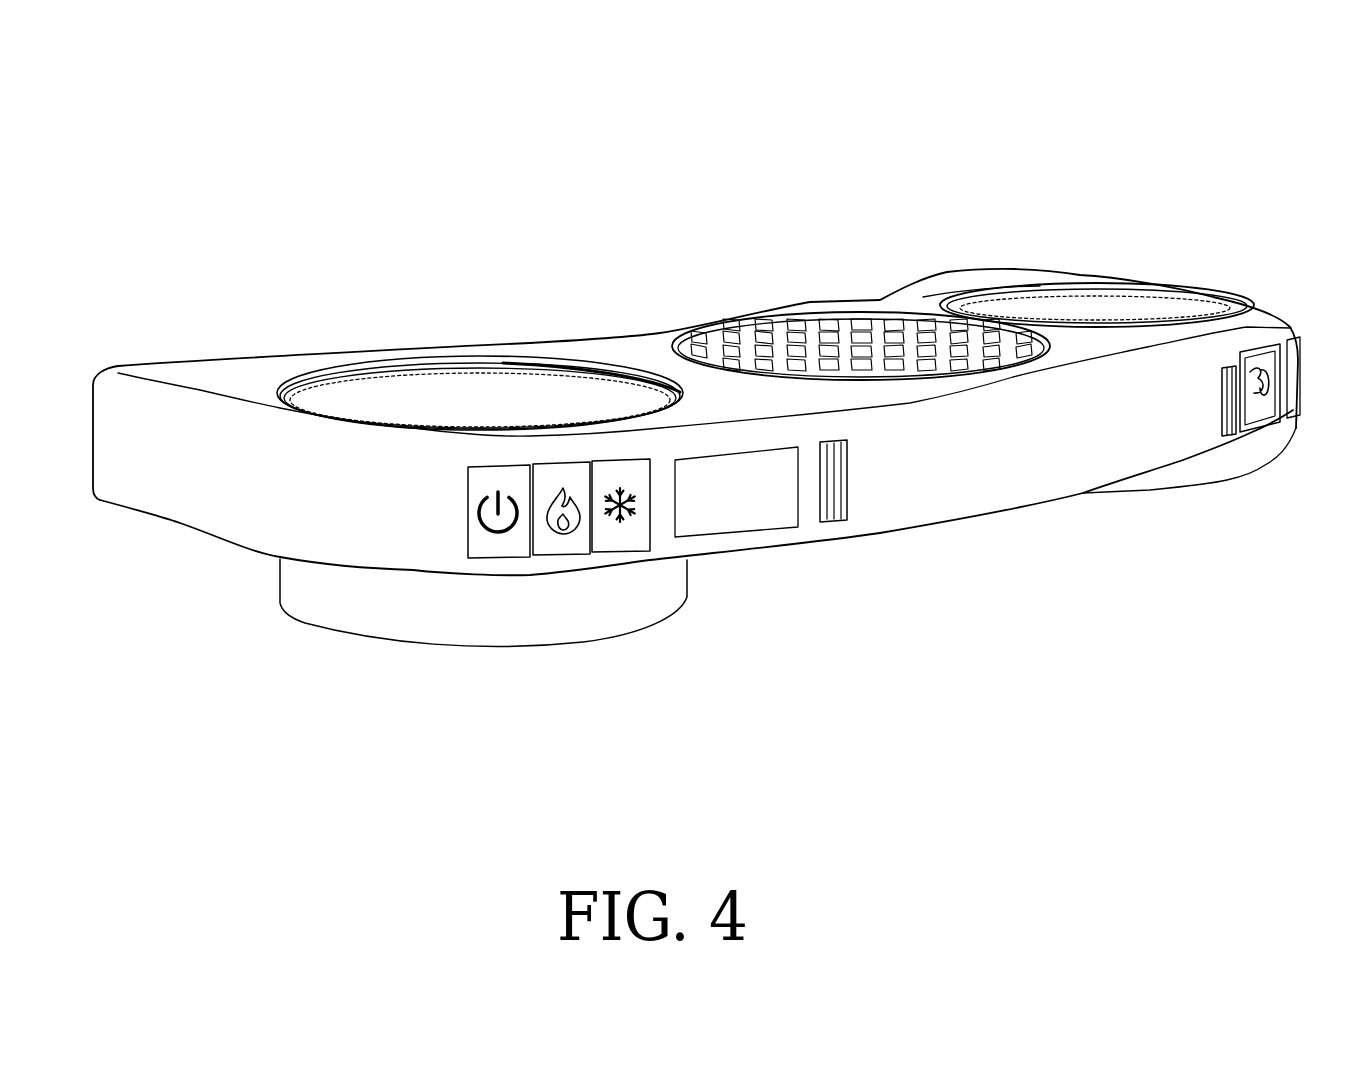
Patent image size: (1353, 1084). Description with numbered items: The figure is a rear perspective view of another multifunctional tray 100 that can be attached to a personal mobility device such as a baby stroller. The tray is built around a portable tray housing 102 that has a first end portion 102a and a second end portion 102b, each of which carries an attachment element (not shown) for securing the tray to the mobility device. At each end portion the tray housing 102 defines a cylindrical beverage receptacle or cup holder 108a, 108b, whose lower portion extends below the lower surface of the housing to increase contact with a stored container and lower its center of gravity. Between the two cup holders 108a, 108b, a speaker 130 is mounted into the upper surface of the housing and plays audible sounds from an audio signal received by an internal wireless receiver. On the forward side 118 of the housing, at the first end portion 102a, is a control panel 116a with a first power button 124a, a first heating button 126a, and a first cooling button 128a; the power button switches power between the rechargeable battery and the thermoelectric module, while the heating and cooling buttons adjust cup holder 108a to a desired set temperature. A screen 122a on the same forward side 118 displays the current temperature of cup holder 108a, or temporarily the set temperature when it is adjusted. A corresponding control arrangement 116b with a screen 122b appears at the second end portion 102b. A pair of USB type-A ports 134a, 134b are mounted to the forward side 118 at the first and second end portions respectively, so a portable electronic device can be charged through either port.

The multifunctional tray 100 is at (1027, 168).
The tray housing 102 is at (655, 358).
The first end portion 102a is at (455, 513).
The second end portion 102b is at (1200, 418).
The cup holder 108a is at (437, 378).
The cup holder 108b is at (1088, 300).
The control panel 116a is at (466, 602).
The second base 116b is at (1296, 430).
The forward side 118 is at (990, 479).
The screen 122a is at (733, 518).
The second display 122b is at (1253, 425).
The first power button 124a is at (498, 543).
The first heating button 126a is at (560, 537).
The first cooling button 128a is at (625, 538).
The speaker 130 is at (858, 318).
The USB type-A port 134a is at (830, 497).
The USB type-A port 134b is at (1222, 422).